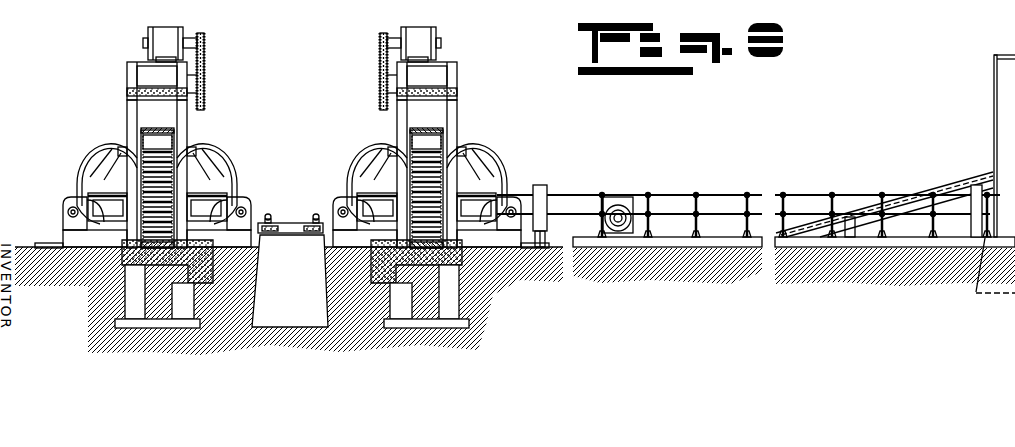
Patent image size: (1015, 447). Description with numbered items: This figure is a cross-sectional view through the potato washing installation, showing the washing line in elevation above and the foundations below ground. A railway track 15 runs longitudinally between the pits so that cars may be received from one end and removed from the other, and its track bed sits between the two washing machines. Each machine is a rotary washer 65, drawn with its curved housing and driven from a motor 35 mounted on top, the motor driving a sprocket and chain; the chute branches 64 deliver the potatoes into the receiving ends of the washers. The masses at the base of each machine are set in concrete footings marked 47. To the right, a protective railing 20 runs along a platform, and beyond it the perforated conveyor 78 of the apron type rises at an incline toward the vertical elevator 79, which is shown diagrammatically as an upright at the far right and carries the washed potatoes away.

The railway track 15 is at (272, 221).
The protective railing 20 is at (638, 196).
The motor 35 is at (172, 31).
The concrete foundation 47 is at (254, 234).
The branches 64 is at (208, 177).
The rotary washers 65 is at (103, 146).
The perforated conveyor 78 is at (893, 205).
The vertical elevator 79 is at (993, 109).